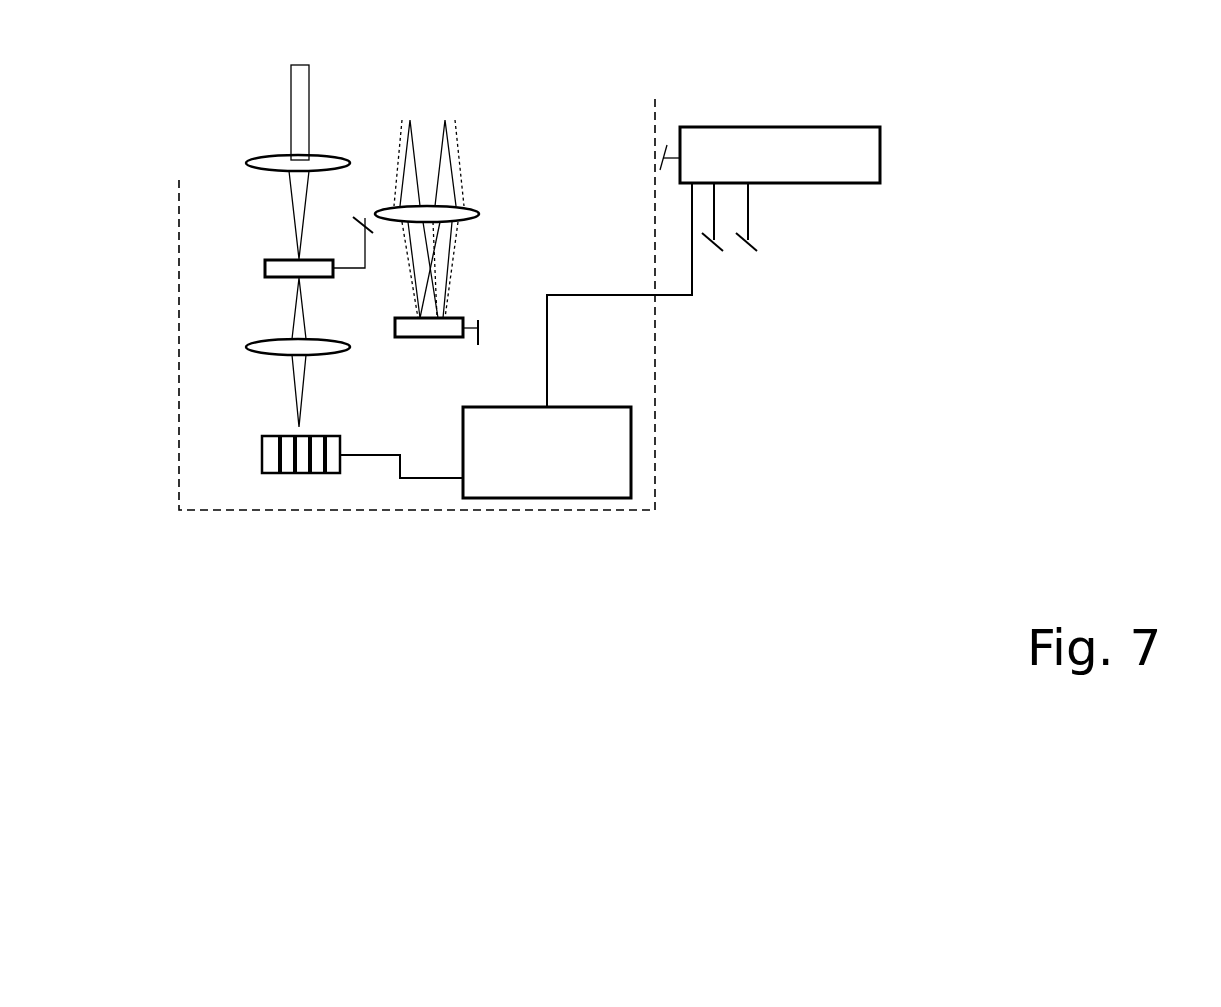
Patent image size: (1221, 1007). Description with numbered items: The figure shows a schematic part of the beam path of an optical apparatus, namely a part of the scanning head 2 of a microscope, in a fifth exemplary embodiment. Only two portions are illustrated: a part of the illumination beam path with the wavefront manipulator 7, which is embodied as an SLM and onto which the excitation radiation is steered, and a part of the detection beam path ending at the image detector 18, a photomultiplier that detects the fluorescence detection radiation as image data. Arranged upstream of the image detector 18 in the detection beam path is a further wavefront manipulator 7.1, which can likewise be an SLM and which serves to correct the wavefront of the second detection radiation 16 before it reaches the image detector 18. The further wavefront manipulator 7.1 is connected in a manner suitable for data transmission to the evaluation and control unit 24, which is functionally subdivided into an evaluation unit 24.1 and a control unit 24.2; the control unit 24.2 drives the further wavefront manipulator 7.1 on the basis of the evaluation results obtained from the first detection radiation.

The scanning head 2 is at (662, 350).
The wavefront manipulator 7 is at (463, 318).
The further wavefront manipulator 7.1 is at (265, 270).
The second detection radiation 16 is at (296, 398).
The image detector 18 is at (305, 473).
The evaluation and control unit 24 is at (671, 312).
The evaluation unit 24.1 is at (582, 472).
The control unit 24.2 is at (822, 172).